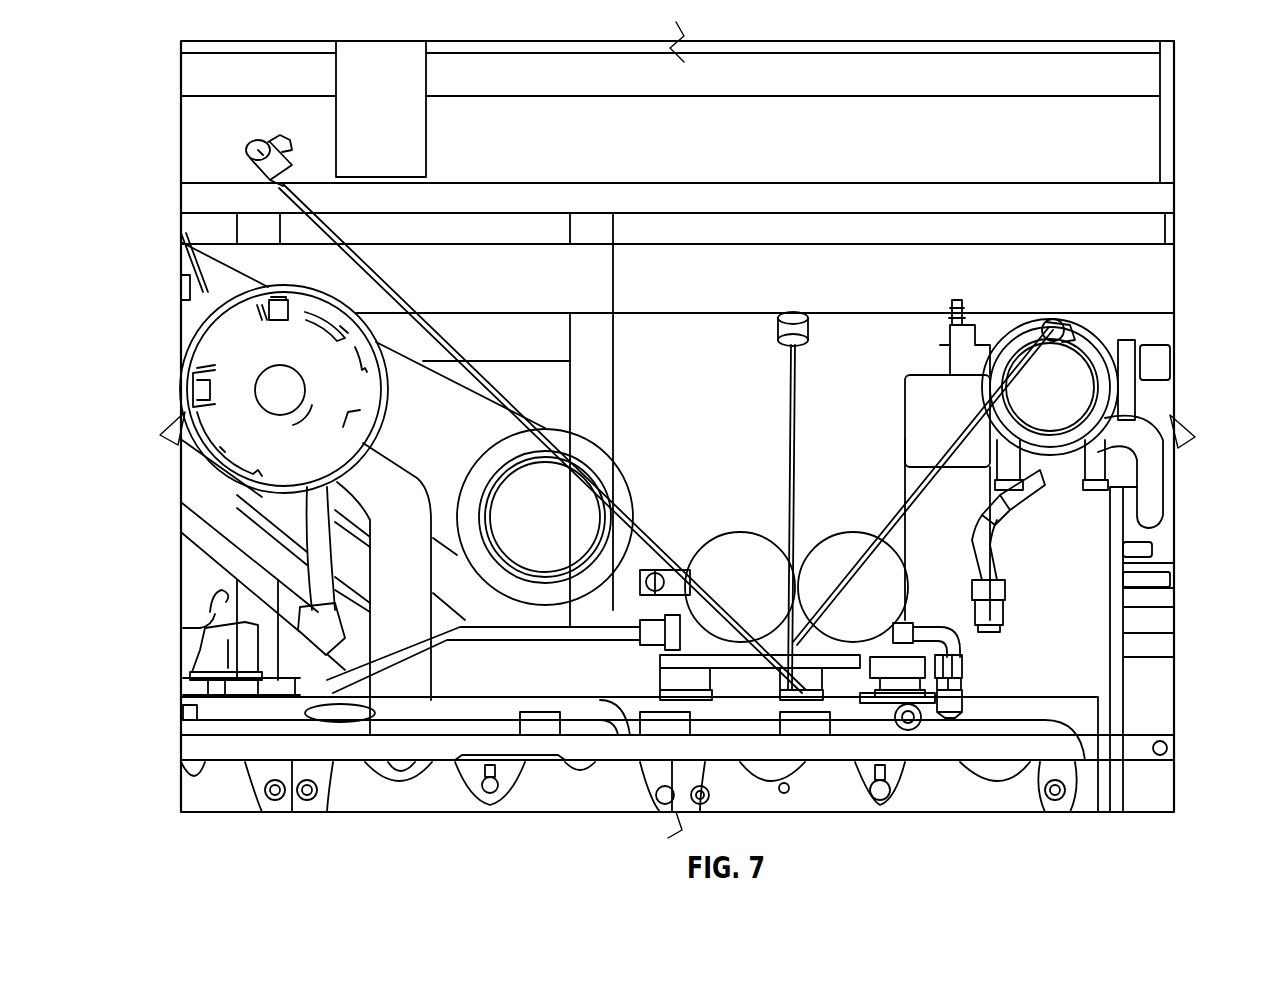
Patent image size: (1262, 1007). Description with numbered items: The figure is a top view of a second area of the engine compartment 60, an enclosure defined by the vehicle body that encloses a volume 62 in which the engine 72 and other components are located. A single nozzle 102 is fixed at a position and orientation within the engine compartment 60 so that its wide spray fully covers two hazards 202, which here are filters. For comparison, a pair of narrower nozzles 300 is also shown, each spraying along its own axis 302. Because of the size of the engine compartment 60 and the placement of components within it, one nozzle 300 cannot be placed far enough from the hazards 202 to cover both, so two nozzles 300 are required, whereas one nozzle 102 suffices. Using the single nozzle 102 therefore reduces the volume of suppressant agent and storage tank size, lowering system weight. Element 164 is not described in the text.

The engine compartment 60 is at (1176, 232).
The volume 62 is at (1128, 152).
The engine 72 is at (948, 818).
The nozzle 102 is at (790, 312).
The cable 164 is at (798, 428).
The hazards 202 is at (727, 536).
The nozzle 300 is at (255, 140).
The axis 302 is at (405, 302).